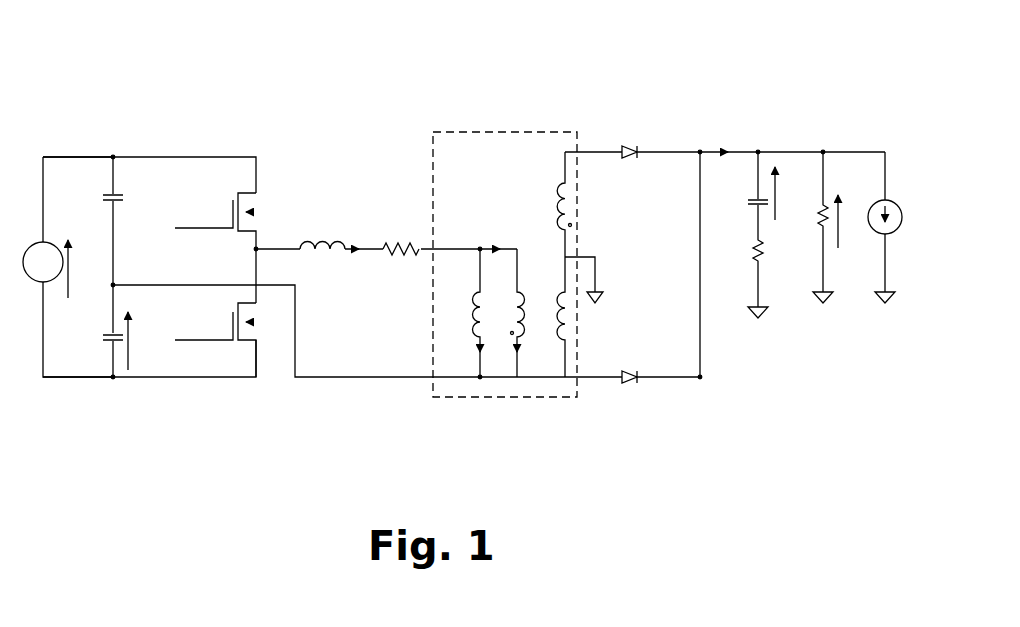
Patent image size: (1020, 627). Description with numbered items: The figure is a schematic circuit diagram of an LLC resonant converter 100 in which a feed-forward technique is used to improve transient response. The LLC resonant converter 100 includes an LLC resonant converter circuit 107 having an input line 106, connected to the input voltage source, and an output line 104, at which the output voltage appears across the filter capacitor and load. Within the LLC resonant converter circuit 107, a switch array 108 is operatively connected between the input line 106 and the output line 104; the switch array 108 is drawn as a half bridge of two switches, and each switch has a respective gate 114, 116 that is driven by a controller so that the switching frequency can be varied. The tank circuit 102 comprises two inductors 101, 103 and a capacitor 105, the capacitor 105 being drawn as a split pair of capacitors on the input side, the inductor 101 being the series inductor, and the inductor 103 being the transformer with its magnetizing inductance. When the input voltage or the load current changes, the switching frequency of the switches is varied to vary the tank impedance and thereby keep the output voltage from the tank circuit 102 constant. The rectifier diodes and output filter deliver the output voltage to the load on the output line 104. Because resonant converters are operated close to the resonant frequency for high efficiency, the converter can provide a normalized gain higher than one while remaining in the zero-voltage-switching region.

The LLC resonant converter 100 is at (360, 147).
The inductor 101 is at (331, 265).
The tank circuit 102 is at (148, 128).
The inductor 103 is at (498, 219).
The output line 104 is at (850, 152).
The capacitor 105 is at (118, 201).
The input line 106 is at (82, 156).
The LLC resonant converter circuit 107 is at (556, 83).
The switch array 108 is at (278, 162).
The gate 114 is at (233, 200).
The gate 116 is at (233, 312).